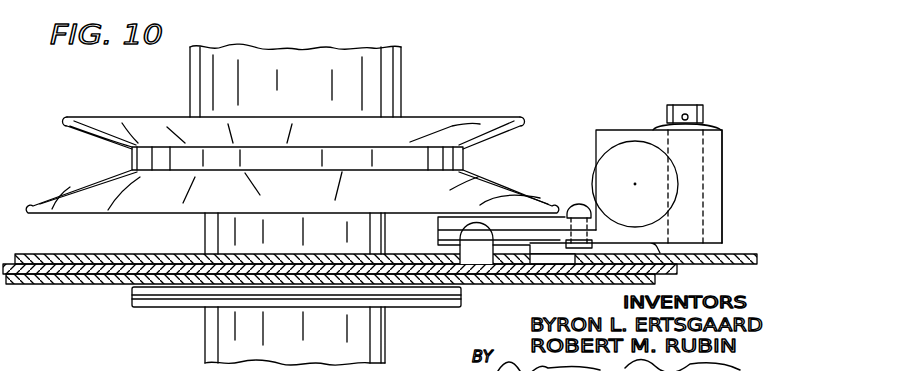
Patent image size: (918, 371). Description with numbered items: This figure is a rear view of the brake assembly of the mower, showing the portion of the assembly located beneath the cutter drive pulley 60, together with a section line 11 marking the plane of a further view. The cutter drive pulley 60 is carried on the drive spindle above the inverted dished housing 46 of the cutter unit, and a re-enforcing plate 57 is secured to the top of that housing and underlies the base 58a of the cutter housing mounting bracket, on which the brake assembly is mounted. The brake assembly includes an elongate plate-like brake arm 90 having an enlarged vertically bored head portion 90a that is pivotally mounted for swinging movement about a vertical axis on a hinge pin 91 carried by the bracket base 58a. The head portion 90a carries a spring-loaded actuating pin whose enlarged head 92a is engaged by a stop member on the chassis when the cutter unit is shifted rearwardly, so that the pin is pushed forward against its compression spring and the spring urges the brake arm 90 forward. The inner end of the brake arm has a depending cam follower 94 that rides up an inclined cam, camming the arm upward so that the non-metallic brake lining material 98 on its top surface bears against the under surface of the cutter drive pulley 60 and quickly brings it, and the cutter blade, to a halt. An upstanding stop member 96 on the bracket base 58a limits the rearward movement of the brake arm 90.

The section line 11- 11 is at (415, 333).
The inverted dished housing 46 is at (527, 285).
The re-enforcing plate 57 is at (676, 273).
The base of the mounting bracket 58a is at (738, 253).
The cutter drive pulley 60 is at (464, 96).
The brake arm 90 is at (622, 240).
The head portion 90a is at (718, 166).
The hinge pin 91 is at (692, 105).
The head of the actuating pin 92a is at (605, 177).
The cam follower 94 is at (513, 246).
The stop member 96 is at (490, 252).
The brake lining material 98 is at (568, 212).